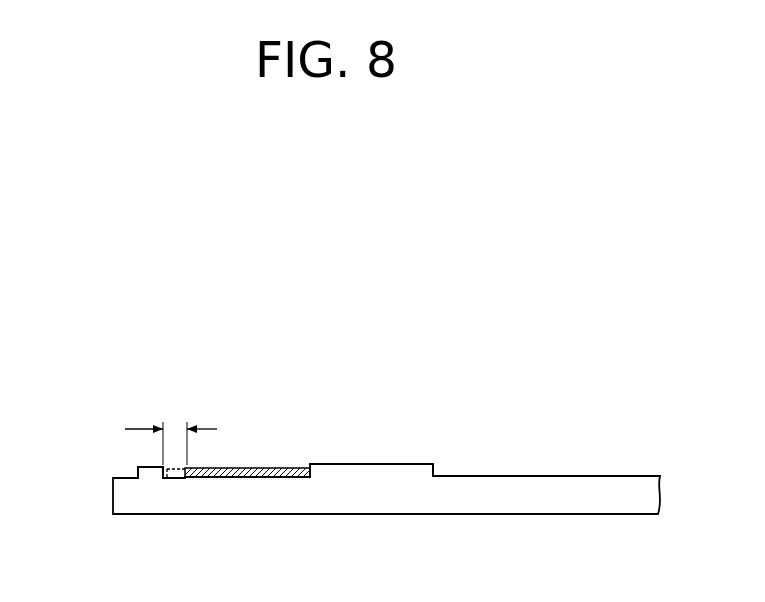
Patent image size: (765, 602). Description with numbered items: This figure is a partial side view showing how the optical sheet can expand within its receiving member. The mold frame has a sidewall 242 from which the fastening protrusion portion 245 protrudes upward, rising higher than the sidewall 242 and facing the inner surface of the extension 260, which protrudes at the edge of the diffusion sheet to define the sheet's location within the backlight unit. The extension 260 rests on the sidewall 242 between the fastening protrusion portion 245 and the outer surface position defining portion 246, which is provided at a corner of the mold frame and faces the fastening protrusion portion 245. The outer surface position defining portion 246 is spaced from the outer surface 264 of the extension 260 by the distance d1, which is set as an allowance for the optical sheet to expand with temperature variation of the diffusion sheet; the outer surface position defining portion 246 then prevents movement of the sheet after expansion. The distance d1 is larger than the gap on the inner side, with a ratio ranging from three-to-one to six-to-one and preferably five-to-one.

The sidewall 242 is at (370, 510).
The fastening protrusion portion 245 is at (370, 464).
The outer surface position defining portion 246 is at (138, 471).
The extension 260 is at (250, 466).
The outer surface 264 is at (185, 478).
The distance d1 is at (171, 430).